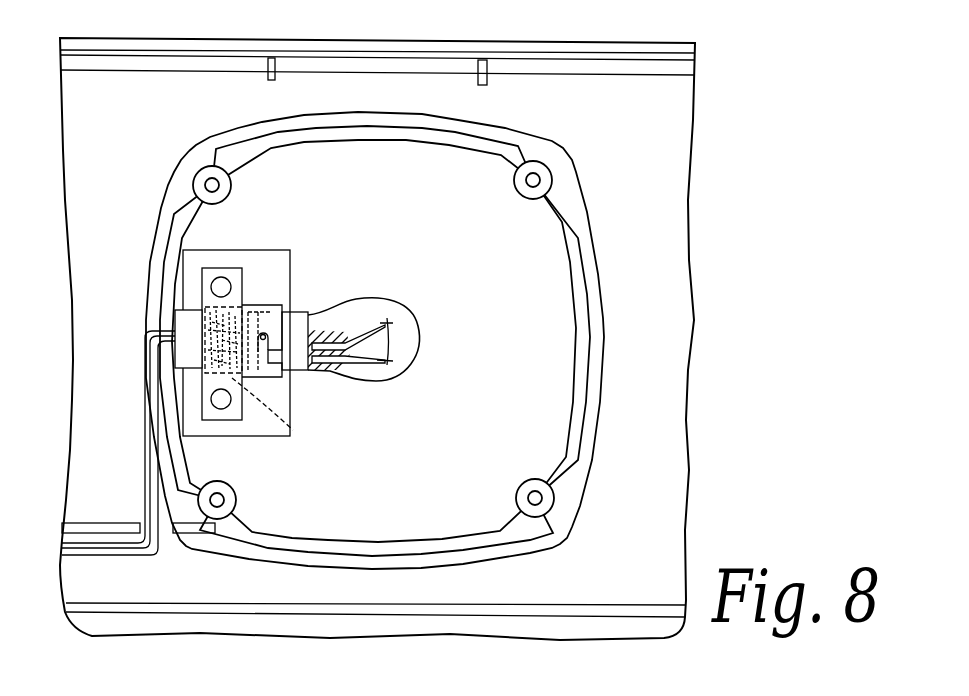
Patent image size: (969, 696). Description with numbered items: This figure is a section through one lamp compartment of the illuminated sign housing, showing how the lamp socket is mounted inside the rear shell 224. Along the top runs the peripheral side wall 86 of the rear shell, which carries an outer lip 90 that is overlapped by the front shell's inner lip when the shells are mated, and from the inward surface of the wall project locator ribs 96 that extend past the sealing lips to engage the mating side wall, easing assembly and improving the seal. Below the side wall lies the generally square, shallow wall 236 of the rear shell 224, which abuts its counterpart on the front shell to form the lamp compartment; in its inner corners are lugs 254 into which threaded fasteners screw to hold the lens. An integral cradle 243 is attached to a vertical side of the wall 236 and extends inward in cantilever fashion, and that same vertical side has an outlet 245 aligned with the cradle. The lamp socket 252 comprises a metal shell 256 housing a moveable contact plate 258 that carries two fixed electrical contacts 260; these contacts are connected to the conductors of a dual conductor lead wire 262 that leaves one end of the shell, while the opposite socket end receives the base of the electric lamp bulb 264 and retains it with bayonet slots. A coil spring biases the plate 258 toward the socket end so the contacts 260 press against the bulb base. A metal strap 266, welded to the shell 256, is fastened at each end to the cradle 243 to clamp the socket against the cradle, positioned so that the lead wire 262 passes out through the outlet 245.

The peripheral side wall 86 is at (557, 57).
The outer lip 90 is at (694, 43).
The rear shell 224 is at (687, 70).
The locator ribs 96 is at (268, 79).
The generally square shallow wall 236 is at (573, 172).
The lugs 254 is at (221, 185).
The cradle 243 is at (290, 273).
The metal shell 256 is at (268, 306).
The fixed electrical contacts 260 is at (250, 307).
The moveable contact plate 258 is at (291, 415).
The lamp socket 252 is at (308, 311).
The electric lamp bulb 264 is at (416, 351).
The outlet 245 is at (176, 346).
The metal strap 266 is at (202, 392).
The dual conductor lead wire 262 is at (93, 546).